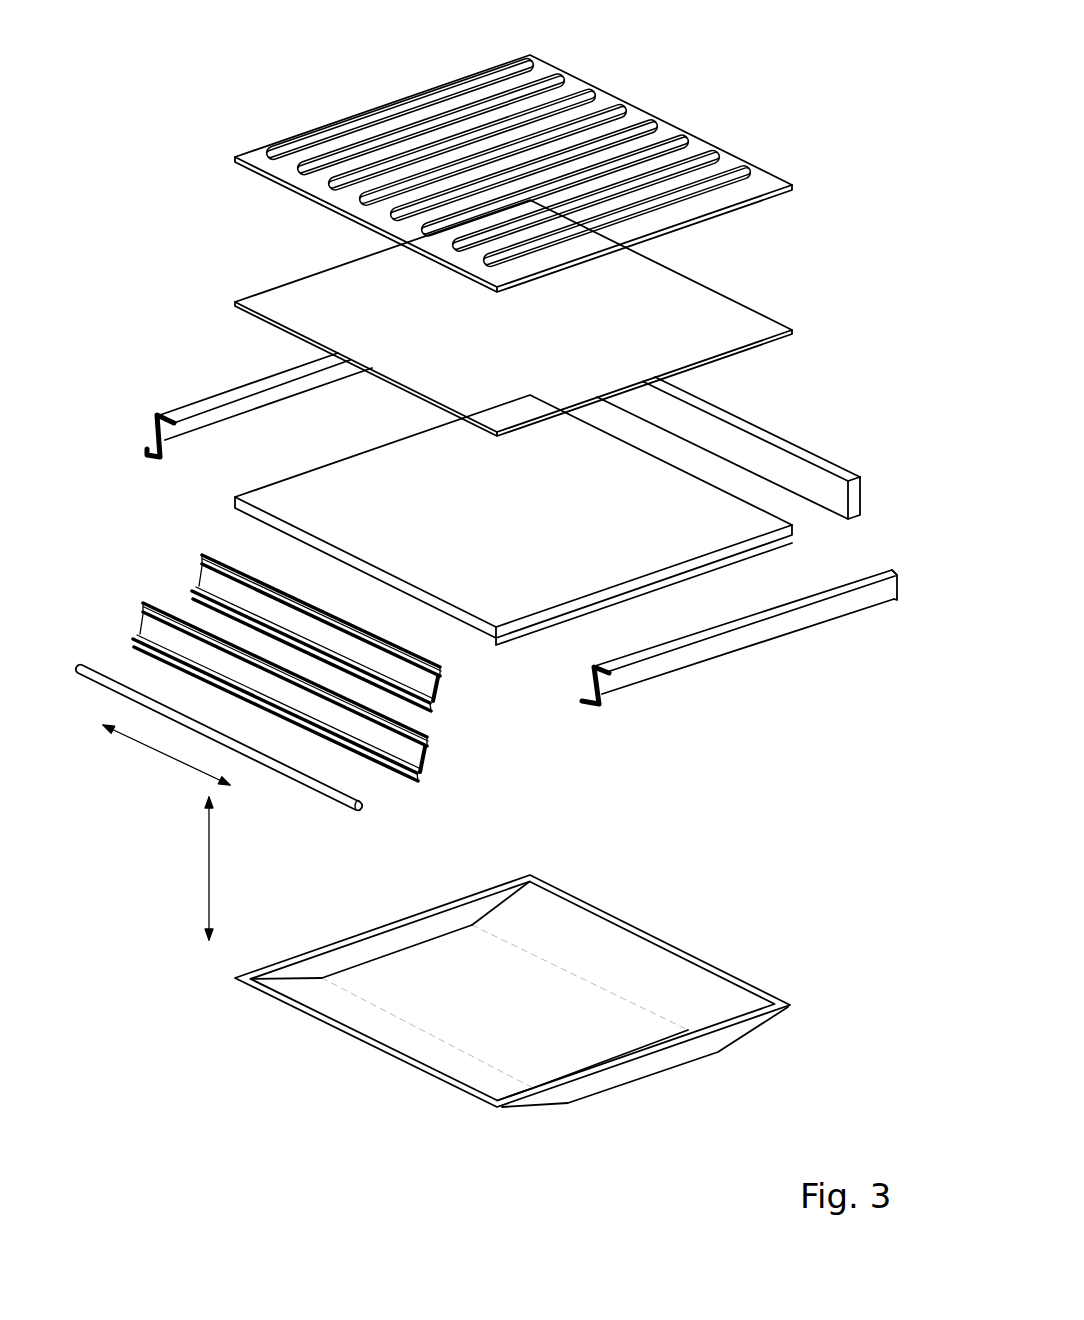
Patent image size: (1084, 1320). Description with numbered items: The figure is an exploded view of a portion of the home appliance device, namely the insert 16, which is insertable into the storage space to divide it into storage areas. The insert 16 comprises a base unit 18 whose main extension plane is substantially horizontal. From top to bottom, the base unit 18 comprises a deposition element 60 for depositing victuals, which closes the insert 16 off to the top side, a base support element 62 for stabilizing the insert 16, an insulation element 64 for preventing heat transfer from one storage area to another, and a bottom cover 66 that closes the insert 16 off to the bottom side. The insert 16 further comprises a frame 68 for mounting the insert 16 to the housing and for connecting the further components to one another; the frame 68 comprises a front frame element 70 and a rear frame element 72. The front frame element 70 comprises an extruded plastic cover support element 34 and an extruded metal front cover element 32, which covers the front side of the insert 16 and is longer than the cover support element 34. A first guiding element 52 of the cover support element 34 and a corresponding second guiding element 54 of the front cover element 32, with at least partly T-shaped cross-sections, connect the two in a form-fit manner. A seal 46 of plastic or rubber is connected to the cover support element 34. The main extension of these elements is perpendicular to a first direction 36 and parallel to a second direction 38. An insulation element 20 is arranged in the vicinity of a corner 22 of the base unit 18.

The insert 16 is at (170, 170).
The base unit 18 is at (770, 307).
The insulation element 20 is at (584, 703).
The corner 22 is at (523, 732).
The front cover element 32 is at (156, 633).
The cover support element 34 is at (208, 582).
The first direction 36 is at (209, 867).
The second direction 38 is at (168, 755).
The seal 46 is at (323, 792).
The first guiding element 52 is at (410, 682).
The second guiding element 54 is at (408, 760).
The deposition element 60 is at (667, 148).
The base support element 62 is at (728, 300).
The insulation element 64 is at (790, 533).
The bottom cover 66 is at (738, 970).
The frame 68 is at (749, 678).
The front frame element 70 is at (256, 722).
The rear frame element 72 is at (780, 426).